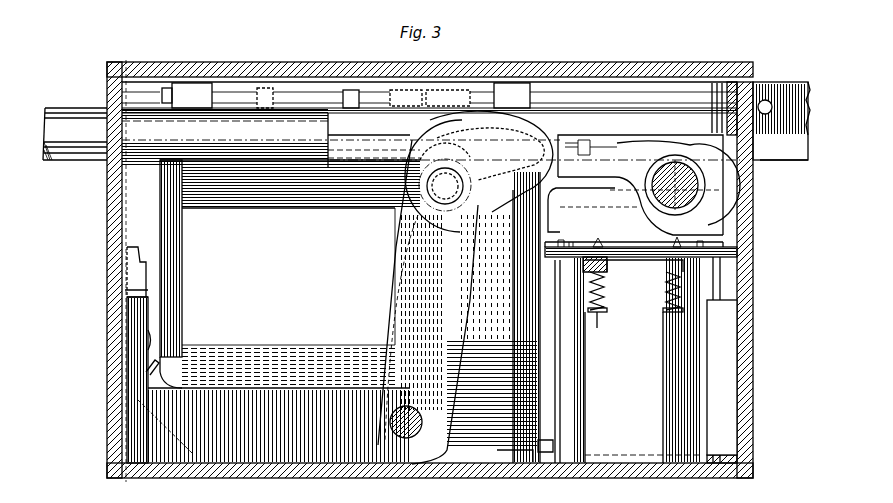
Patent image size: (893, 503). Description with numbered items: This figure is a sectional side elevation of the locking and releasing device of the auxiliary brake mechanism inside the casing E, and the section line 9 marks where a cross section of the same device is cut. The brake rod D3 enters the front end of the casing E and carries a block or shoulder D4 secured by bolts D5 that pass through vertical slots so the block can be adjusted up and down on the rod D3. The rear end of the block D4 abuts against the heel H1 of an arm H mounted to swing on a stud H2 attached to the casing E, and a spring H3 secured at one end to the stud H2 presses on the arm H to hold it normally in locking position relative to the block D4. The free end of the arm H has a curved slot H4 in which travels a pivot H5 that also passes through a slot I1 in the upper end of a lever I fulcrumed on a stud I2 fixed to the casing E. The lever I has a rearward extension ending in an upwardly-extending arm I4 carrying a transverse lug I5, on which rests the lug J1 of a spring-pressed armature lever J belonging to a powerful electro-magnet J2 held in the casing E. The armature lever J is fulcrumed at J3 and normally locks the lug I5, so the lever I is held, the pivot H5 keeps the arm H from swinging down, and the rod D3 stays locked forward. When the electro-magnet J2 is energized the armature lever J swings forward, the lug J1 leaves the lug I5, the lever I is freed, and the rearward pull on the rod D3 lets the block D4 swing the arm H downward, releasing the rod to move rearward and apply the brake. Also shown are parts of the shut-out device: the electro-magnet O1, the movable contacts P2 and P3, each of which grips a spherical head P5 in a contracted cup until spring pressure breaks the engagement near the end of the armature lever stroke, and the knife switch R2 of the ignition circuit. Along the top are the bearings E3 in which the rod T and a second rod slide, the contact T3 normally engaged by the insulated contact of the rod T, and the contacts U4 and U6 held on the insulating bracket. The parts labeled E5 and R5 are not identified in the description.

The section line 9 is at (126, 500).
The casing E is at (110, 210).
The bearings E3 is at (200, 86).
The block on guide rail E5 is at (512, 86).
The contact U6 is at (276, 88).
The contact U4 is at (458, 88).
The rod T is at (645, 95).
The contact T3 is at (351, 88).
The arm H is at (600, 98).
The heel H1 is at (712, 120).
The stud H2 is at (700, 190).
The spring H3 is at (595, 152).
The curved slot H4 is at (472, 220).
The pivot H5 is at (440, 200).
The rod D3 is at (72, 122).
The block or shoulder D4 is at (795, 98).
The bolts D5 is at (770, 98).
The lever I is at (395, 300).
The slot I1 is at (434, 150).
The stud I2 is at (406, 440).
The upwardly-extending arm I4 is at (125, 340).
The lug I5 is at (132, 312).
The armature lever J is at (136, 252).
The lug J1 is at (146, 290).
The electro-magnet J2 is at (284, 311).
The fulcrum J3 is at (110, 458).
The movable contact P2 is at (680, 244).
The movable contact P3 is at (660, 290).
The spherical head P5 is at (648, 246).
The knife switch R2 is at (705, 243).
The screw R5 is at (560, 252).
The electro-magnet O1 is at (642, 387).